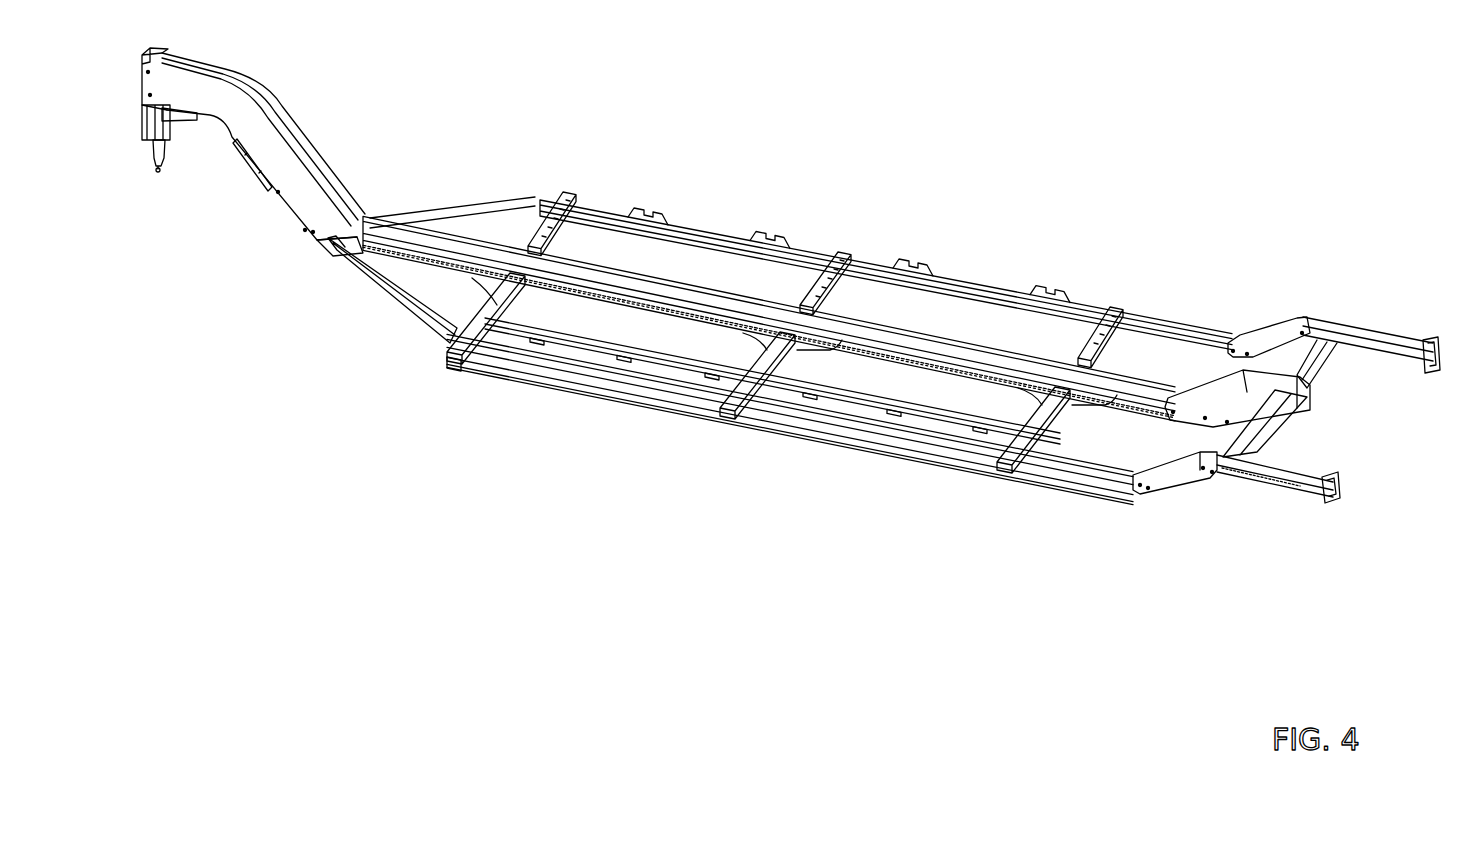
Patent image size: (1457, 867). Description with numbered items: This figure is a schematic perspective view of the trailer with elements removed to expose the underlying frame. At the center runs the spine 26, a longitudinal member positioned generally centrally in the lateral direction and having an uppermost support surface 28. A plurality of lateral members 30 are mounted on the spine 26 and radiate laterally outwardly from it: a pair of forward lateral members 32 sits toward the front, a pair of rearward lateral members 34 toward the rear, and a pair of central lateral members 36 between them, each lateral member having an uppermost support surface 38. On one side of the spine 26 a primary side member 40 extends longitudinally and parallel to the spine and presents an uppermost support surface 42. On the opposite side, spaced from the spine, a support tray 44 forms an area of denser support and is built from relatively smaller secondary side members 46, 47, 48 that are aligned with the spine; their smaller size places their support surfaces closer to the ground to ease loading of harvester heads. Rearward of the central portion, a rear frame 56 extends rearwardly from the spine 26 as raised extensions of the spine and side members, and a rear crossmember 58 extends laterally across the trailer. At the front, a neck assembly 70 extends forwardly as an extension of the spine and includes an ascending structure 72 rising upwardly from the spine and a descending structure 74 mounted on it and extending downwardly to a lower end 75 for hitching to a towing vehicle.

The spine 26 is at (769, 300).
The uppermost support surface 28 is at (947, 340).
The lateral members 30 is at (880, 291).
The forward lateral members 32 is at (545, 195).
The rearward lateral members 34 is at (1100, 292).
The central lateral members 36 is at (813, 290).
The uppermost support surface 38 is at (470, 312).
The primary side member 40 is at (705, 228).
The uppermost support surface 42 is at (597, 210).
The support tray 44 is at (790, 394).
The secondary side member 46 is at (478, 377).
The secondary side member 47 is at (557, 360).
The secondary side member 48 is at (607, 345).
The rear frame 56 is at (1286, 399).
The rear crossmember 58 is at (1247, 458).
The neck assembly 70 is at (274, 152).
The ascending structure 72 is at (302, 190).
The descending structure 74 is at (143, 120).
The lower end 75 is at (160, 172).